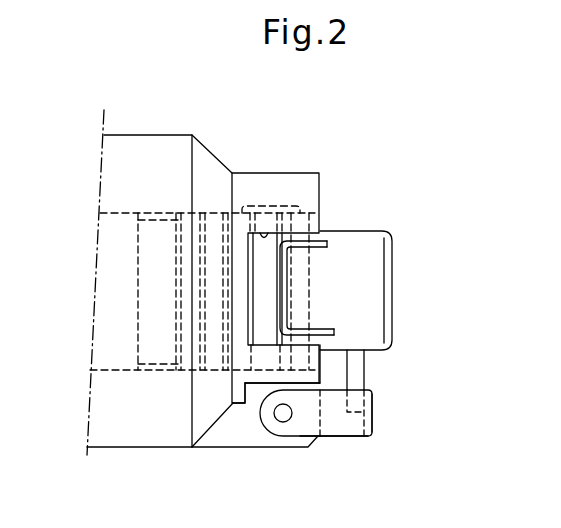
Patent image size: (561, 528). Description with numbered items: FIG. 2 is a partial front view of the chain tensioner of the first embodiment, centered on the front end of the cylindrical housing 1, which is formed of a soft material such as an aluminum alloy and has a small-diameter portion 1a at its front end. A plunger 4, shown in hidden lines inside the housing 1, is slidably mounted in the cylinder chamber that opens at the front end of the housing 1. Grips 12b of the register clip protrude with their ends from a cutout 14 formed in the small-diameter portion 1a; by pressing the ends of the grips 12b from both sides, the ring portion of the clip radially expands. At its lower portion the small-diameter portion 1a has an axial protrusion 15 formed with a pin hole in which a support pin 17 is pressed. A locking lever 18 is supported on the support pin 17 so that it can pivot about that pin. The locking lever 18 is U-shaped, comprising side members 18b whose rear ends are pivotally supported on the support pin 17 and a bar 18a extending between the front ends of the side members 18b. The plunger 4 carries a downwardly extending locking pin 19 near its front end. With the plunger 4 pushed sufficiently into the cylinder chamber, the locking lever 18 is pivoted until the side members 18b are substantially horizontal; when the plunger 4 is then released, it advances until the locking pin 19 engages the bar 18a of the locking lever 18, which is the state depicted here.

The housing 1 is at (152, 135).
The small-diameter portion 1a is at (255, 180).
The plunger 4 is at (120, 283).
The grips 12b is at (337, 330).
The cutout 14 is at (270, 237).
The axial protrusion 15 is at (233, 428).
The support pin 17 is at (283, 422).
The locking lever 18 is at (373, 407).
The bar 18a is at (372, 427).
The side members 18b is at (335, 427).
The locking pin 19 is at (357, 370).